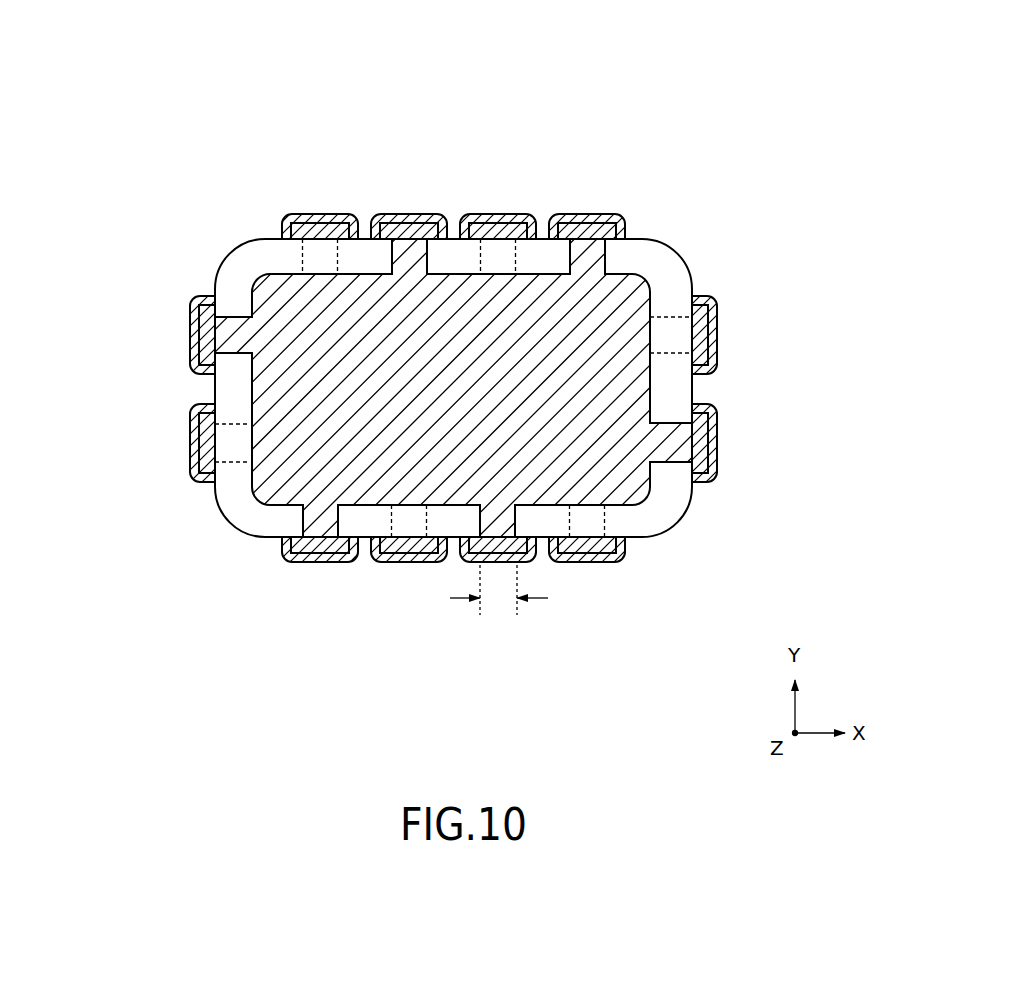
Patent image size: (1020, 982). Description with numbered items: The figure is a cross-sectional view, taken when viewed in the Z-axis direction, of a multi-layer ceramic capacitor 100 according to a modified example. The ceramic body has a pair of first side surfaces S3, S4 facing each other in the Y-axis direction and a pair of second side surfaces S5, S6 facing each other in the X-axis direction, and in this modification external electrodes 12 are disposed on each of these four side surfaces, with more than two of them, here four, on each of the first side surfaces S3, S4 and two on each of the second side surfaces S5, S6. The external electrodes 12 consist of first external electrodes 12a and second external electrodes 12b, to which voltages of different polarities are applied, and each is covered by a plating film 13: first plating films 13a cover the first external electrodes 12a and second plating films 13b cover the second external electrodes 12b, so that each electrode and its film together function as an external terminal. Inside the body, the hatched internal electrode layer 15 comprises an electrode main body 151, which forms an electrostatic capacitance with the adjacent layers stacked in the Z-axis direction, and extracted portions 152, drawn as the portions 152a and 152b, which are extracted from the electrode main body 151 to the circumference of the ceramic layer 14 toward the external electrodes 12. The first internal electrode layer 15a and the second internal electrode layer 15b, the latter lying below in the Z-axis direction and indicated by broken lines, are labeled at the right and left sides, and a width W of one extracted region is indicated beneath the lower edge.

The multi-layer ceramic capacitor 100 is at (747, 90).
The external electrodes 12 is at (452, 398).
The first external electrodes 12a is at (388, 214).
The second external electrodes 12b is at (645, 594).
The plating films 13 is at (448, 396).
The first plating films 13a is at (425, 214).
The second plating films 13b is at (600, 673).
The ceramic layer 14 is at (222, 270).
The internal electrode layer 15 is at (510, 412).
The first internal electrode layer 15a is at (658, 390).
The second internal electrode layer 15b is at (243, 387).
The electrode main body 151 is at (672, 292).
The extracted portions 152 is at (462, 412).
The first extended portion 152a is at (640, 270).
The second extended portion 152b is at (683, 582).
The first side surface S3 is at (268, 539).
The first side surface S4 is at (625, 239).
The second side surface S5 is at (217, 488).
The second side surface S6 is at (693, 487).
The width of opening W is at (499, 603).